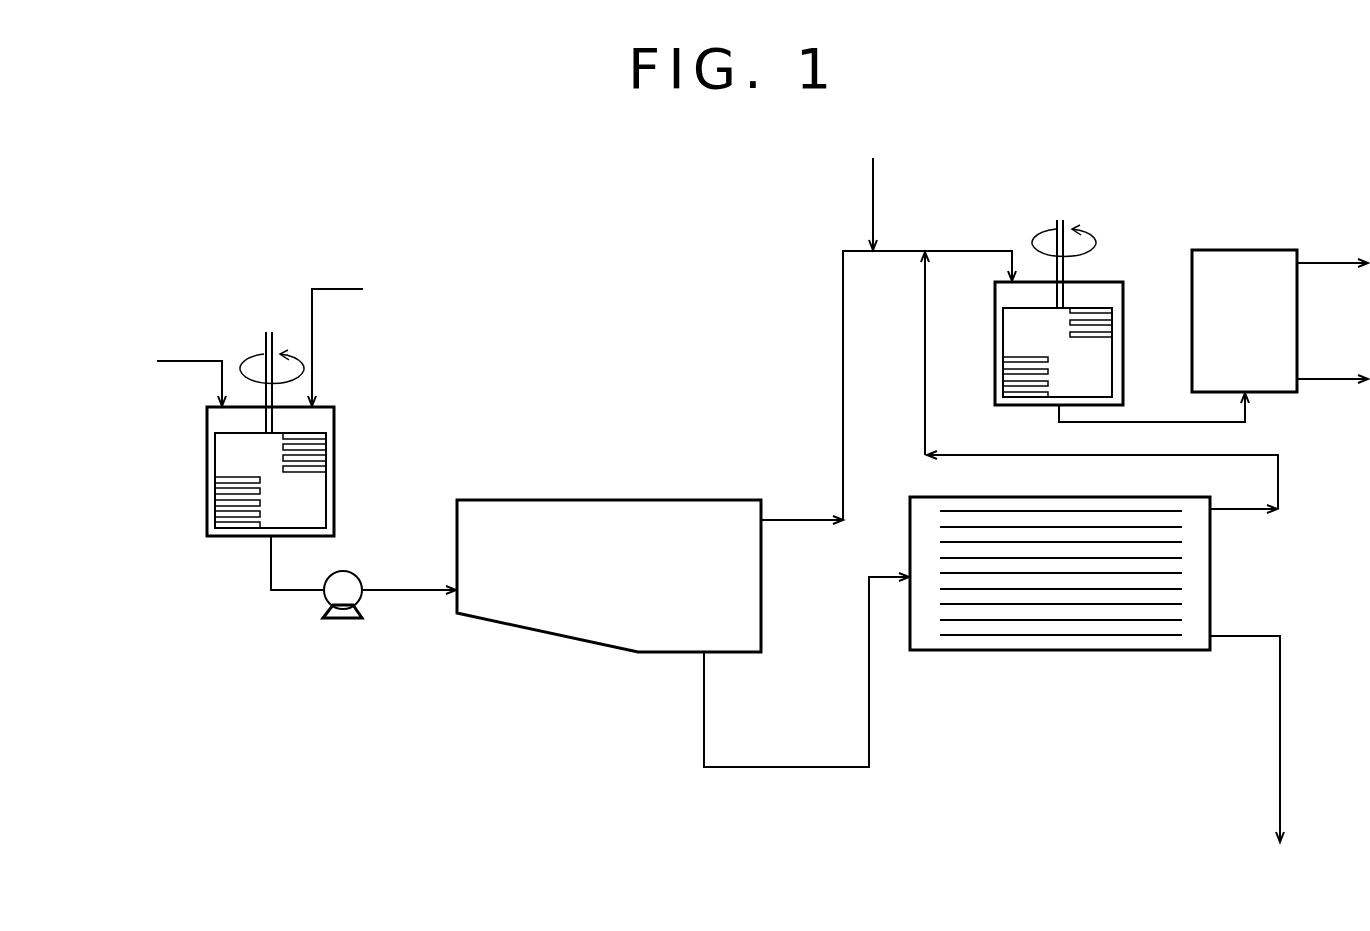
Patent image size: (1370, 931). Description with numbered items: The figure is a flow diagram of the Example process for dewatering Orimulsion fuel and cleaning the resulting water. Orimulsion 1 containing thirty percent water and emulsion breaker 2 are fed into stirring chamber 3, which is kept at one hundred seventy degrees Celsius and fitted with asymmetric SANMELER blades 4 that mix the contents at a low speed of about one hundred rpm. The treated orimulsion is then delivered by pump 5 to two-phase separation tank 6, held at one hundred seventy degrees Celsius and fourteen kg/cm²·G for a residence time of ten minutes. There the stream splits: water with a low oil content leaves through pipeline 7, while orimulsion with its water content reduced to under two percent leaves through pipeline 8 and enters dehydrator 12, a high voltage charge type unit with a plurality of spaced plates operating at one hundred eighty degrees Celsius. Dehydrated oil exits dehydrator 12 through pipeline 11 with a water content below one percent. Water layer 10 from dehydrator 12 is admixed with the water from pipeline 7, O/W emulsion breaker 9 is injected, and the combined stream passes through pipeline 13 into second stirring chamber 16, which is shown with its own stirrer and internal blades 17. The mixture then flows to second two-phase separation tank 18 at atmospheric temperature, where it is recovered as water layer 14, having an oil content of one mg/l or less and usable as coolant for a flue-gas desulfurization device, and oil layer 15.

The Orimulsion 1 is at (184, 361).
The emulsion breaker 2 is at (358, 289).
The stirring chamber 3 is at (335, 428).
The SANMELER blades 4 is at (216, 467).
The pump 5 is at (343, 620).
The two-phase separation tank 6 is at (578, 623).
The pipeline 7 is at (795, 518).
The pipeline 8 is at (800, 767).
The O/W emulsion breaker 9 is at (875, 193).
The water layer 10 is at (1243, 512).
The pipeline 11 is at (1280, 687).
The dehydrator 12 is at (1065, 652).
The pipeline 13 is at (968, 250).
The water layer 14 is at (1327, 260).
The oil layer 15 is at (1327, 378).
The second stirring chamber 16 is at (1123, 342).
The heating jacket of second vessel 17 is at (1003, 343).
The second two-phase separation tank 18 is at (1235, 248).